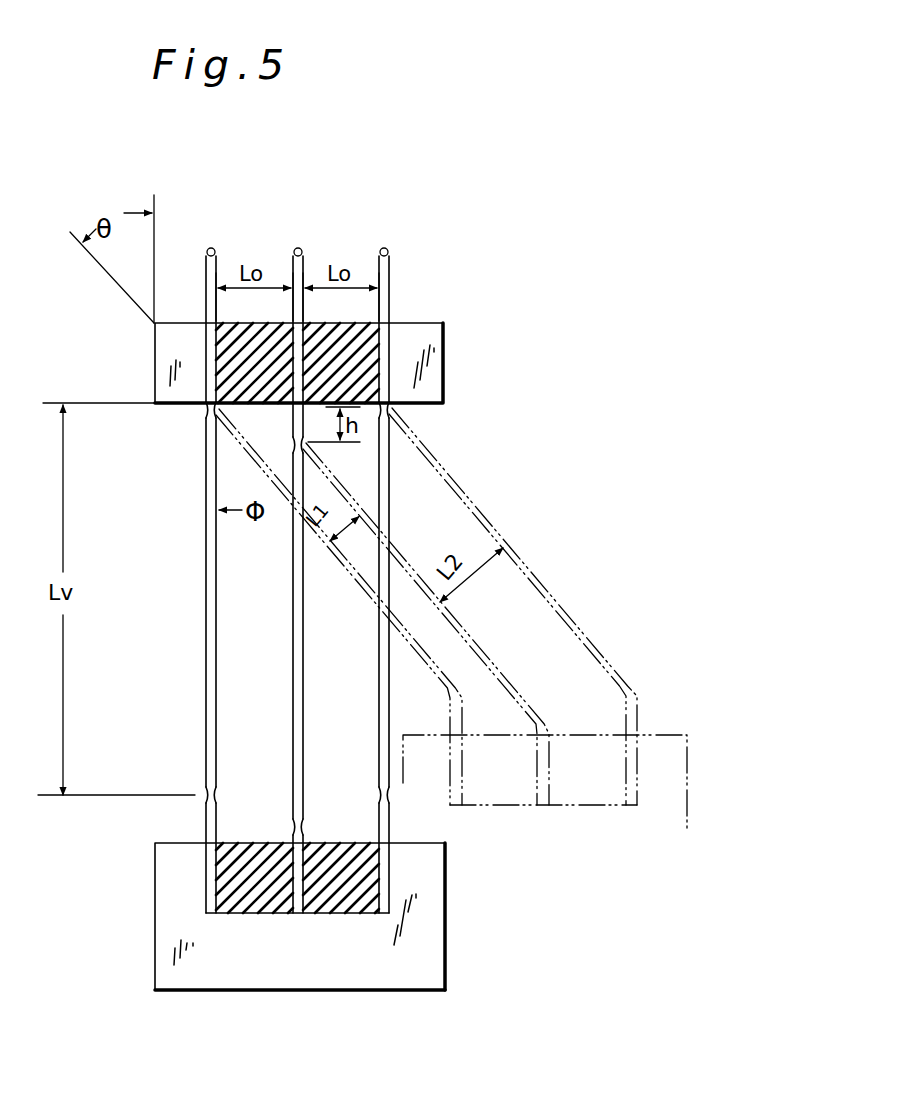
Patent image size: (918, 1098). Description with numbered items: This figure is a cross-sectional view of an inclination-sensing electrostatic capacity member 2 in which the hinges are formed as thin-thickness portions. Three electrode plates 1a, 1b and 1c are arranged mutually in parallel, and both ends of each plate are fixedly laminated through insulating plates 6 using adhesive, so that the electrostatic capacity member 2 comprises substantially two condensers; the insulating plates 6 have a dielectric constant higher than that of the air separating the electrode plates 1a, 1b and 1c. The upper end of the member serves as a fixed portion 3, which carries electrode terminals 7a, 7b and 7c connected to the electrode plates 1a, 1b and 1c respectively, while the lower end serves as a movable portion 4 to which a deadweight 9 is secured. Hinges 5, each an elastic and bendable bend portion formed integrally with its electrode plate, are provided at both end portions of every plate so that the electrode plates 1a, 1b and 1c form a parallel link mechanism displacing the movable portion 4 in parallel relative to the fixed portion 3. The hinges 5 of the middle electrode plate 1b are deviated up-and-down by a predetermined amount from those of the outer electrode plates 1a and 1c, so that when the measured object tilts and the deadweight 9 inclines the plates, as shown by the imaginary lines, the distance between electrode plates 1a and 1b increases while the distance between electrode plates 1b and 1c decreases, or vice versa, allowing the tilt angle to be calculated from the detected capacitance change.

The first electrode plate 1a is at (217, 667).
The second electrode plate 1b is at (303, 662).
The third electrode plate 1c is at (378, 718).
The electrostatic capacity member 2 is at (463, 455).
The fixed portion 3 is at (440, 363).
The movable portion 4 is at (432, 894).
The hinge 5 is at (205, 409).
The insulating plate 6 is at (373, 350).
The electrode terminal 7a is at (212, 248).
The electrode terminal 7b is at (298, 248).
The electrode terminal 7c is at (385, 248).
The deadweight 9 is at (297, 975).